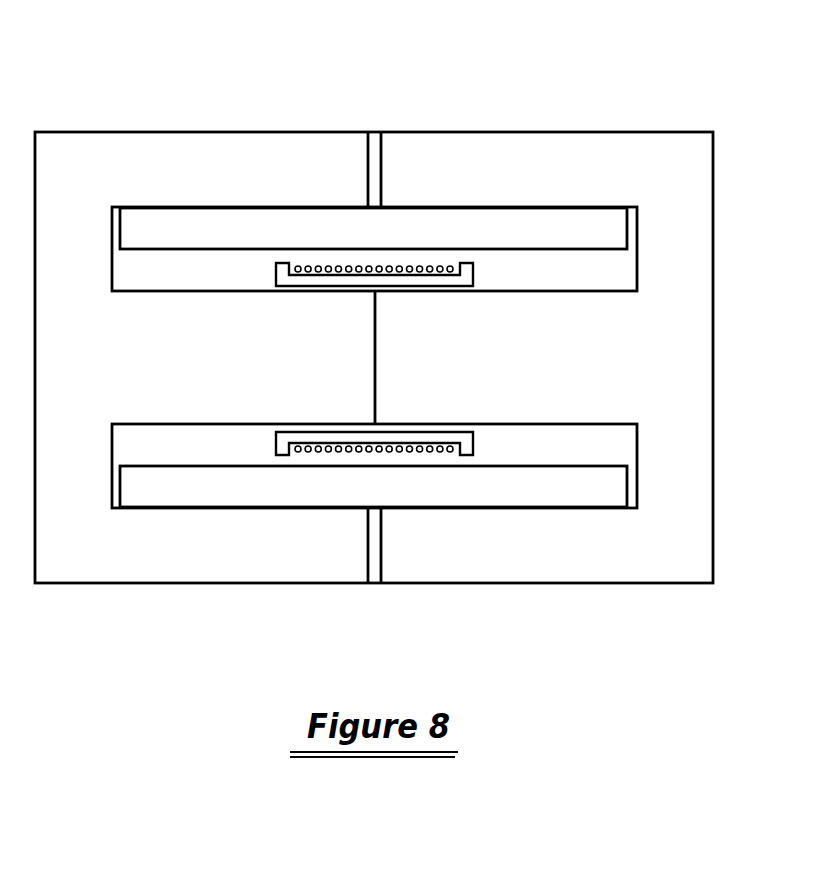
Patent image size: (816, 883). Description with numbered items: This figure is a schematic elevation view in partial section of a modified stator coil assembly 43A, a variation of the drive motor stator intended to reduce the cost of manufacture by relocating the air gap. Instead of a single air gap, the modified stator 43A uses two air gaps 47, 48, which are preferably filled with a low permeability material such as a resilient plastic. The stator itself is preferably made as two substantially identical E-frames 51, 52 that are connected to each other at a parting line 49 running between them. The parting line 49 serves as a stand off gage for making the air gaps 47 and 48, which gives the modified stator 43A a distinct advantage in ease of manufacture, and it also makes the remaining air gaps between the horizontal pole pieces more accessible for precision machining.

The modified stator coil assembly 43A is at (184, 101).
The air gap 47 is at (372, 145).
The air gap 48 is at (377, 549).
The parting line 49 is at (377, 361).
The E-frame 51 is at (244, 366).
The E-frame 52 is at (567, 366).